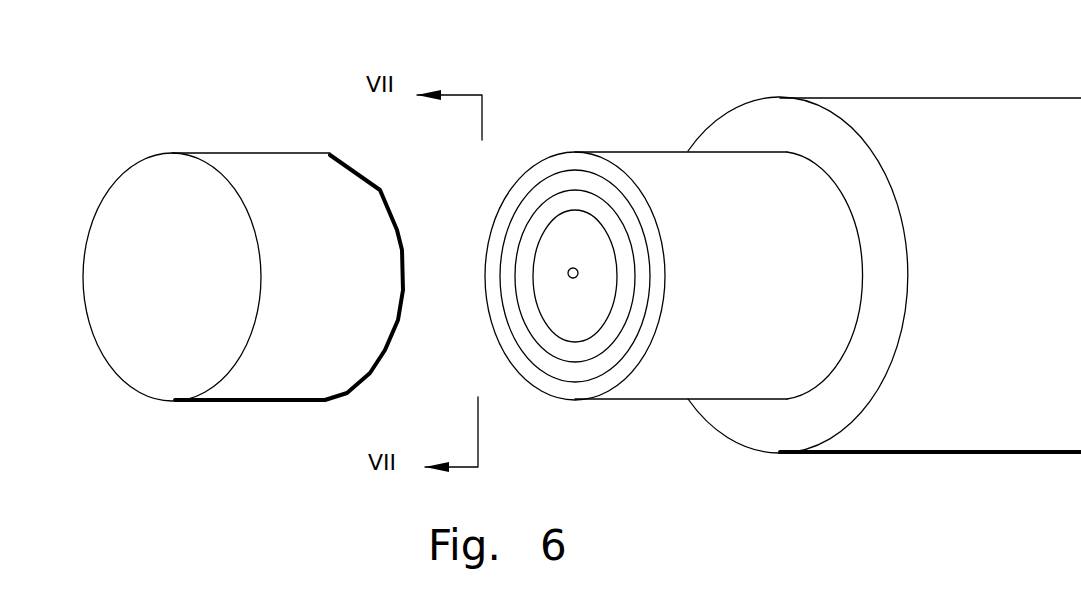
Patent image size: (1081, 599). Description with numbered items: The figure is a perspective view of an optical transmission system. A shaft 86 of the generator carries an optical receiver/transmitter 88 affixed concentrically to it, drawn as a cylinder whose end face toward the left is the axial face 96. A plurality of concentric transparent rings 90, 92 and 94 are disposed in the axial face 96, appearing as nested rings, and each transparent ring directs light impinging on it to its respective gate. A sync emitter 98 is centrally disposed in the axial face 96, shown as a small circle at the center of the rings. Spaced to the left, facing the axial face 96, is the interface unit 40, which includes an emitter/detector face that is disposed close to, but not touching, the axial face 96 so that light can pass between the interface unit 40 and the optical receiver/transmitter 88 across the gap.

The interface unit 40 is at (273, 380).
The shaft 86 is at (956, 138).
The optical receiver/transmitter 88 is at (697, 358).
The transparent ring 90 is at (510, 207).
The transparent ring 92 is at (563, 187).
The transparent ring 94 is at (613, 232).
The axial face 96 is at (548, 385).
The sync emitter 98 is at (567, 278).